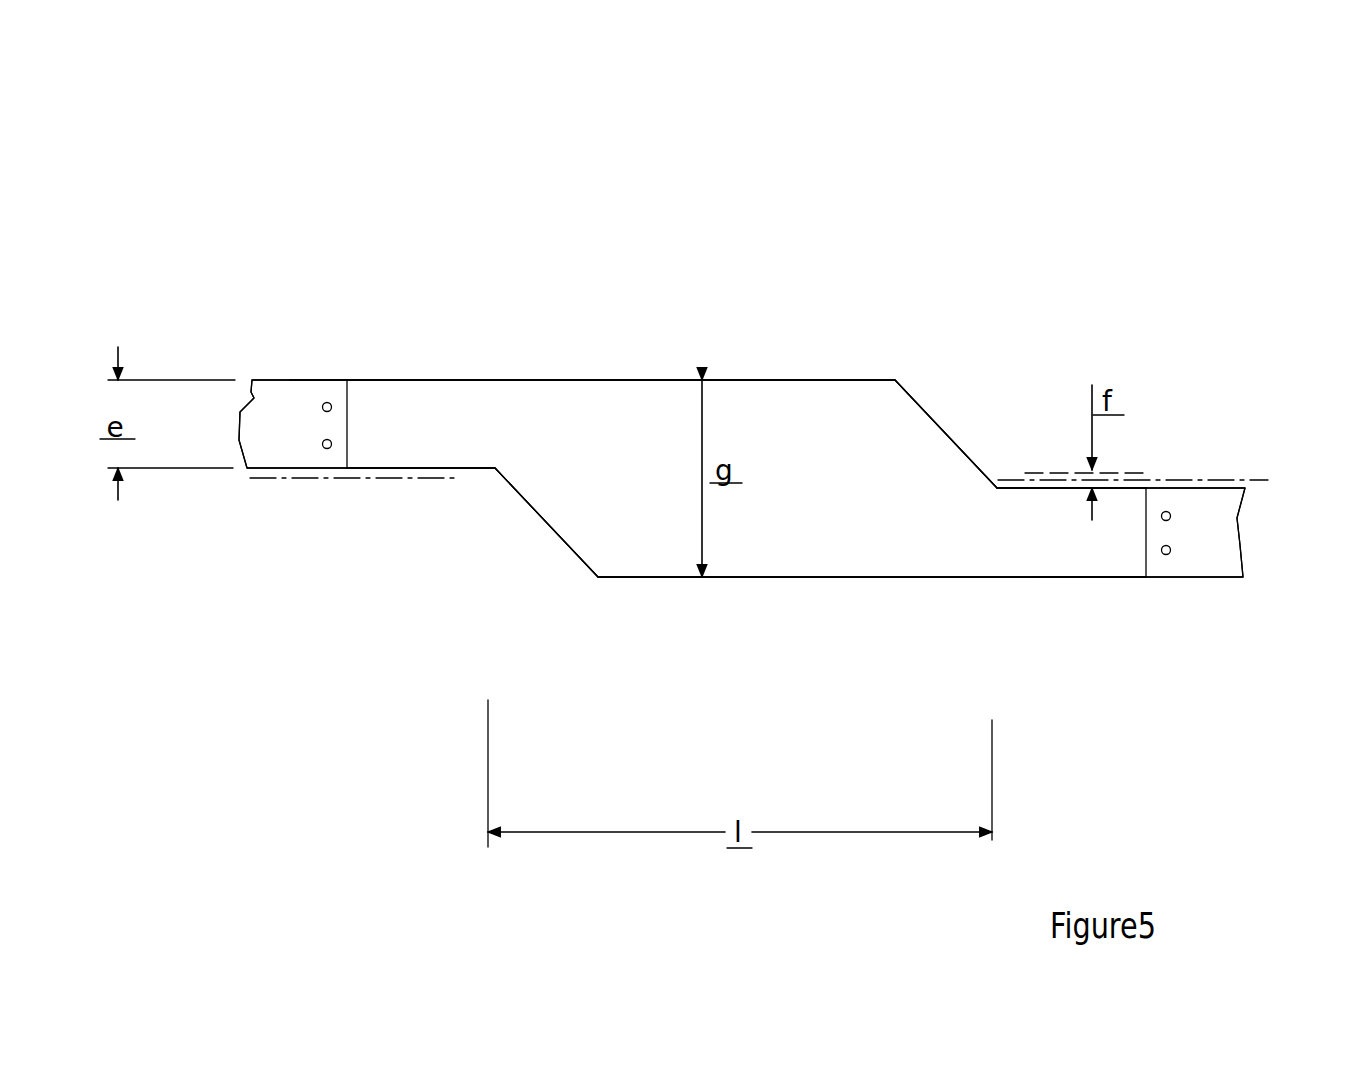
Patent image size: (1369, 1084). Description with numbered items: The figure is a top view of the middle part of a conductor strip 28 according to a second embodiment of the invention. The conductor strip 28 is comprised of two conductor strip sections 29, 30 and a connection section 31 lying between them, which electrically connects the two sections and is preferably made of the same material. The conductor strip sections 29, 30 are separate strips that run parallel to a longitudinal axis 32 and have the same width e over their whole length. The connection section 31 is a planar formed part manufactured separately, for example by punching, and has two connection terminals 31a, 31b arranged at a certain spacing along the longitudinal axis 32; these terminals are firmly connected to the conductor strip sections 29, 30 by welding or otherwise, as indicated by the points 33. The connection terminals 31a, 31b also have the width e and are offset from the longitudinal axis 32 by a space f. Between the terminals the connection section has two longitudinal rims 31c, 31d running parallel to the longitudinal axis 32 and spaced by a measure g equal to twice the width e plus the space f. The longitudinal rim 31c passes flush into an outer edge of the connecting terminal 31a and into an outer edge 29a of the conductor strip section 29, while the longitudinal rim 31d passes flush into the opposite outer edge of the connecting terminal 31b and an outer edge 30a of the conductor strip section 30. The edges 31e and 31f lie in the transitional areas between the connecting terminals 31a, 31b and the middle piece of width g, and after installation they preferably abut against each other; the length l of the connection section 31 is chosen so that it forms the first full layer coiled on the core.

The conductor strip 28 is at (499, 258).
The conductor strip section 29 is at (283, 407).
The outer edge of conductor strip section 29a is at (313, 378).
The conductor strip section 30 is at (1213, 550).
The outer edge of conductor strip section 30a is at (1060, 577).
The connection section 31 is at (867, 435).
The connection terminal 31a is at (440, 432).
The connection terminal 31b is at (1023, 530).
The longitudinal rim 31c is at (530, 380).
The longitudinal rim 31d is at (650, 577).
The edge 31e is at (933, 422).
The edge 31f is at (545, 523).
The longitudinal axis 32 is at (1265, 477).
The points 33 is at (324, 411).